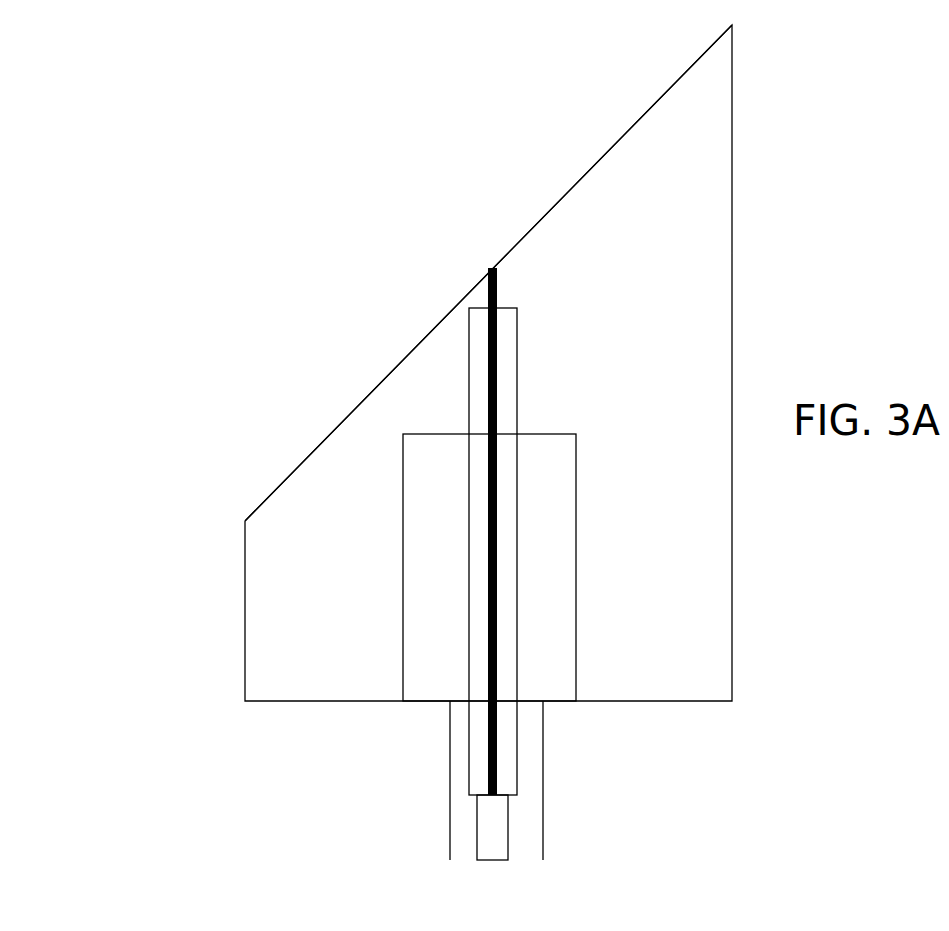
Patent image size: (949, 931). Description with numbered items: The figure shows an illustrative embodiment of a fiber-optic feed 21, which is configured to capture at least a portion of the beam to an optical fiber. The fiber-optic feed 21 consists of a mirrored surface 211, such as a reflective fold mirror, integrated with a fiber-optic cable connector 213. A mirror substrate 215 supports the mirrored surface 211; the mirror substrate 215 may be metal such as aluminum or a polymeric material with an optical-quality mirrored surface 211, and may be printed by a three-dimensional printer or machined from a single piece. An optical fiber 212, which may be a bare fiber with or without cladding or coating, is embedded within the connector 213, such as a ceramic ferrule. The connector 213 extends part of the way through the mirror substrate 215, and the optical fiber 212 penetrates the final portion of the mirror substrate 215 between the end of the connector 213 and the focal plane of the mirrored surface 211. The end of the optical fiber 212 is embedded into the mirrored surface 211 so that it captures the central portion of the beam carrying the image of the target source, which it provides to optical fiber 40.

The fiber-optic feed 21 is at (459, 363).
The mirrored surface 211 is at (478, 273).
The optical fiber 212 is at (558, 525).
The fiber-optic cable connector 213 is at (560, 547).
The mirror substrate 215 is at (368, 567).
The optical fiber 40 is at (533, 780).